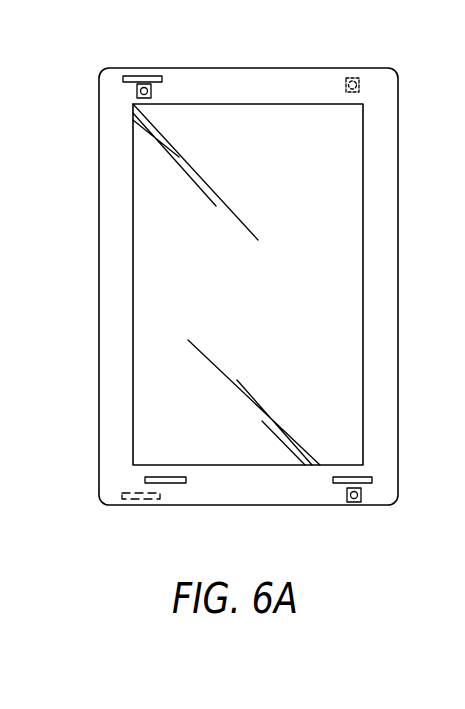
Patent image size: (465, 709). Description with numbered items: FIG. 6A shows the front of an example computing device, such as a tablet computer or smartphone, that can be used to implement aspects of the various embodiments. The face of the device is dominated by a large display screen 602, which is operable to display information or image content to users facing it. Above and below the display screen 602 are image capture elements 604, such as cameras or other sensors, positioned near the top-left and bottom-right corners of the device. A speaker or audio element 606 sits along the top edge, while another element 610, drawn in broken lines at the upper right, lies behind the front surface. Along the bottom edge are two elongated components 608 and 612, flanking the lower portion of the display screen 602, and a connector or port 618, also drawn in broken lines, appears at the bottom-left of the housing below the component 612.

The display 602 is at (133, 340).
The camera 604 is at (137, 92).
The speaker 606 is at (152, 76).
The button / bar 608 is at (372, 480).
The sensor 610 is at (350, 78).
The button / bar 612 is at (172, 483).
The connector port 618 is at (140, 500).